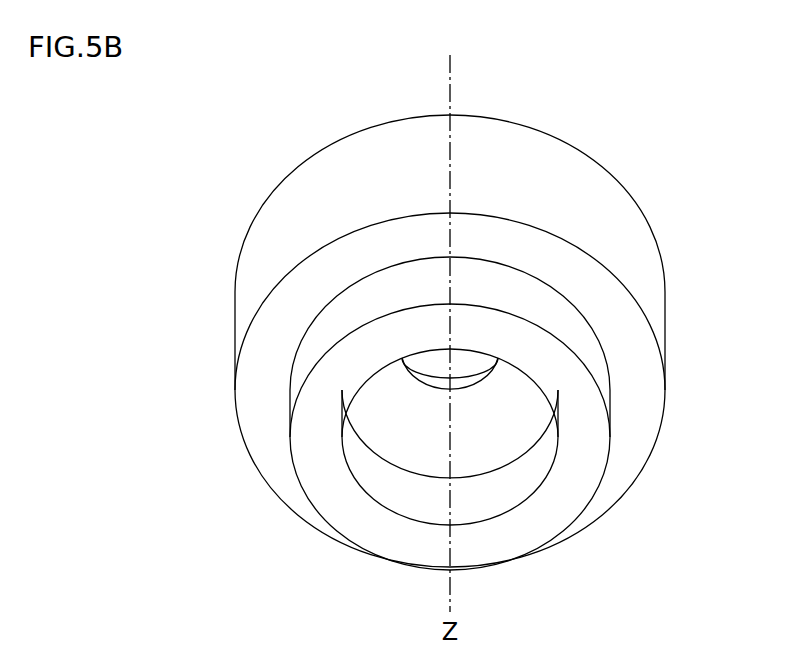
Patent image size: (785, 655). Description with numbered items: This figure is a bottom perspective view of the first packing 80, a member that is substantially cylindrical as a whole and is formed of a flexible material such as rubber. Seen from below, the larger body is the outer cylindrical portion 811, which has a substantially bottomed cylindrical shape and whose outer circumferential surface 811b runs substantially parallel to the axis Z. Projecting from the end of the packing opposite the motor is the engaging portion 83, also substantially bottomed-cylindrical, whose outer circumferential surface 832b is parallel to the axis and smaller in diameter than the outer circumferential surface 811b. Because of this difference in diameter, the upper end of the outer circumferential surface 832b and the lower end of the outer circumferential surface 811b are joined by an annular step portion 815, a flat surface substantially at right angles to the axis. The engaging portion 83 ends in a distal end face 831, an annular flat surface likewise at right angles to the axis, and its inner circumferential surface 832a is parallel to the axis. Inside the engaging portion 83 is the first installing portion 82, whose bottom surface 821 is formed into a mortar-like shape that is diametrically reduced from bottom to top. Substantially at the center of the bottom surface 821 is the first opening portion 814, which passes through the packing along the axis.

The first packing 80 is at (215, 192).
The outer cylindrical portion 811 is at (590, 182).
The outer circumferential surface of the outer cylindrical portion 811b is at (535, 187).
The step portion 815 is at (285, 310).
The engaging portion 83 is at (339, 305).
The outer circumferential surface of the engaging portion 832b is at (307, 355).
The distal end face 831 is at (502, 535).
The first installing portion 82 is at (505, 428).
The bottom surface 821 is at (417, 427).
The inner circumferential surface of the engaging portion 832a is at (425, 495).
The first opening portion 814 is at (502, 394).